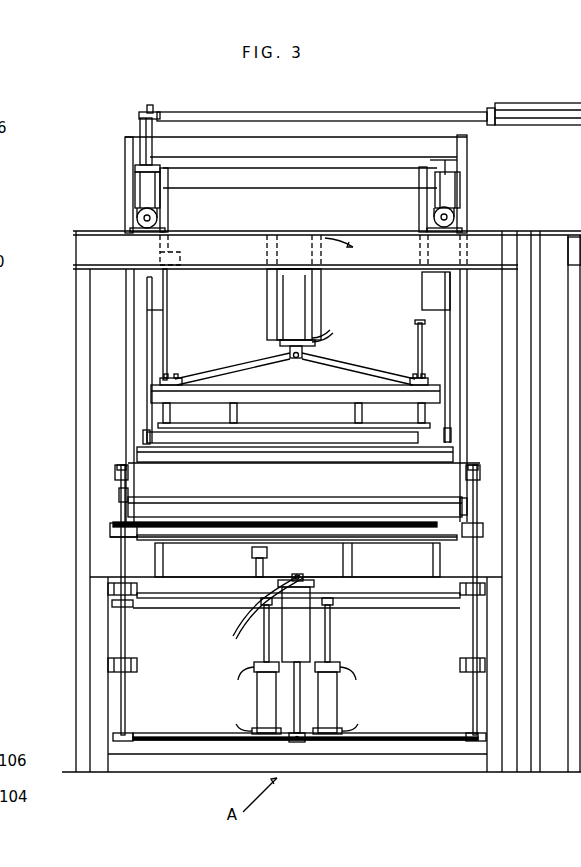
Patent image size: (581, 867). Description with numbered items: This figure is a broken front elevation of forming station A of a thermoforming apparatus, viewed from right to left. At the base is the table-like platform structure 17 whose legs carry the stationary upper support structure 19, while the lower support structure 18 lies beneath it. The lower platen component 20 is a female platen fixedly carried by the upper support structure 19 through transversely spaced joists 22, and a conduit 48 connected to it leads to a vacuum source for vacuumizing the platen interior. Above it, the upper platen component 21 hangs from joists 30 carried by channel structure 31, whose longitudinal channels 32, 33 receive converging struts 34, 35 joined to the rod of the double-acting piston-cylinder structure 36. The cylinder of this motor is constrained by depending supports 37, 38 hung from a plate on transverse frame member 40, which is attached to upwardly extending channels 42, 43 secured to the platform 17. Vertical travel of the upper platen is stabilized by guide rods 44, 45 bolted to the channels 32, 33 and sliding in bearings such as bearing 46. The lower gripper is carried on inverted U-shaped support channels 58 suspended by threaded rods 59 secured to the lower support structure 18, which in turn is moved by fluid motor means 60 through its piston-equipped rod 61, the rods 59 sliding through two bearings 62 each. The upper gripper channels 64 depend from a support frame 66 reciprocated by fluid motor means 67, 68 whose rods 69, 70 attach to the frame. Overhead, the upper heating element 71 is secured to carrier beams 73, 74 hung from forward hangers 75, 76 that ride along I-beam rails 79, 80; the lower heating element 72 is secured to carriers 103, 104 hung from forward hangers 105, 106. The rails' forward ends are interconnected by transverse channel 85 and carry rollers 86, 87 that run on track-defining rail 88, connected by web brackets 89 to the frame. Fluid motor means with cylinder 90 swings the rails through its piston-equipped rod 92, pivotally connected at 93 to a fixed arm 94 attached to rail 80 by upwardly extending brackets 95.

The table-like platform structure 17 is at (97, 578).
The lower support structure 18 is at (141, 735).
The upper support structure 19 is at (397, 587).
The lower platen component 20 is at (137, 539).
The upper platen component 21 is at (147, 437).
The joists 22 is at (433, 561).
The joists 30 is at (170, 412).
The channel structure 31 is at (151, 392).
The channel 32 is at (175, 378).
The channel 33 is at (413, 378).
The strut 34 is at (257, 361).
The strut 35 is at (340, 367).
The piston-cylinder structure 36 is at (308, 283).
The depending support 37 is at (273, 283).
The depending support 38 is at (310, 317).
The transversely disposed frame member 40 is at (77, 239).
The upwardly extending channel 42 is at (76, 284).
The upwardly extending channel 43 is at (502, 330).
The guide rod 44 is at (167, 331).
The guide rod 45 is at (418, 330).
The bearing 46 is at (178, 267).
The conduit 48 is at (236, 631).
The support channel 58 is at (113, 530).
The rod 59 is at (121, 715).
The fluid motor means 60 is at (310, 618).
The piston-equipped rod 61 is at (300, 710).
The bearing 62 is at (108, 589).
The support channel 64 is at (115, 472).
The support frame 66 is at (112, 603).
The fluid motor means 67 is at (257, 692).
The fluid motor means 68 is at (337, 690).
The piston-equipped rod 69 is at (264, 645).
The piston-equipped rod 70 is at (330, 650).
The upper heating element 71 is at (137, 455).
The lower heating element 72 is at (128, 507).
The carrier beam 73 is at (143, 435).
The carrier beam 74 is at (451, 433).
The forward hanger 75 is at (160, 303).
The forward hanger 76 is at (422, 305).
The I-beam rail 79 is at (455, 163).
The I-beam rail 80 is at (135, 166).
The transversely extending channel 85 is at (287, 189).
The roller 86 is at (137, 218).
The roller 87 is at (462, 218).
The track-defining rail 88 is at (199, 231).
The fluid motor means 89 is at (540, 121).
The cylinder 90 is at (508, 103).
The piston-equipped rod 92 is at (220, 112).
The pivotal connection 93 is at (150, 108).
The fixed arm 94 is at (143, 117).
The bracket 95 is at (140, 127).
The carrier 103 is at (119, 495).
The carrier 104 is at (460, 501).
The forward hanger 105 is at (128, 337).
The forward hanger 106 is at (465, 340).